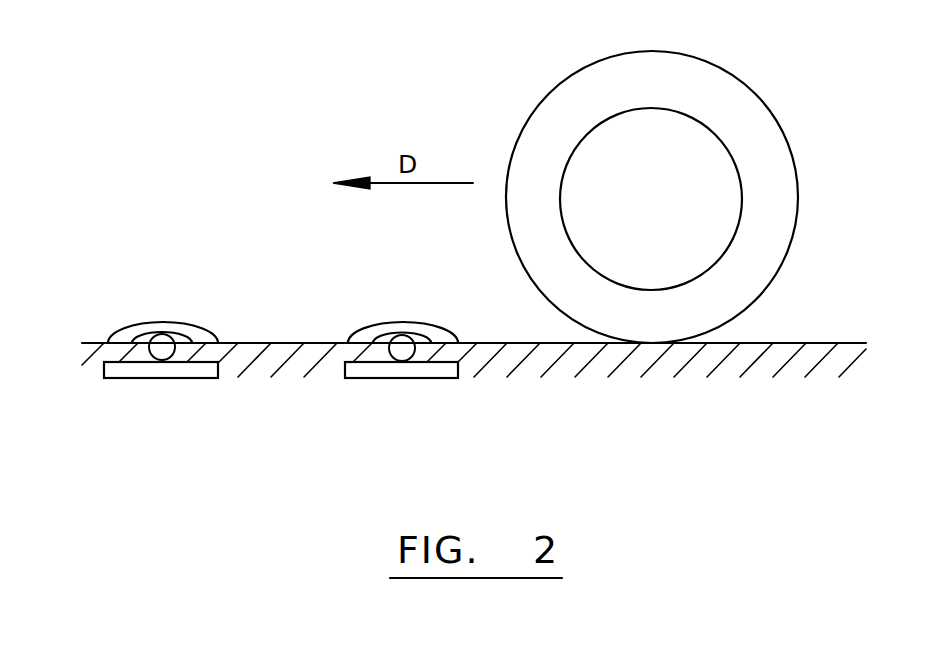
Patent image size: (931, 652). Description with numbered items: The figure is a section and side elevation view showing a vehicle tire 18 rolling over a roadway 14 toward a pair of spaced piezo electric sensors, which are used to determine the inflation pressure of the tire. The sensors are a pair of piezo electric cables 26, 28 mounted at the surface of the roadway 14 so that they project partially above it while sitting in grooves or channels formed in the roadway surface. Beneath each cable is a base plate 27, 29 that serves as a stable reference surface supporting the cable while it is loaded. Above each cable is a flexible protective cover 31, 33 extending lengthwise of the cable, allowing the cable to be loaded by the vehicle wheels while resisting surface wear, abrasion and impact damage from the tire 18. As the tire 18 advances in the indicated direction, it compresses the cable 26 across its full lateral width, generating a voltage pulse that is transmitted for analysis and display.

The roadway 14 is at (280, 343).
The tire 18 is at (747, 116).
The piezo electric cable 26 is at (404, 352).
The base plate 27 is at (380, 370).
The piezo electric cable 28 is at (163, 350).
The base plate 29 is at (139, 370).
The flexible protective cover 31 is at (390, 323).
The flexible protective cover 33 is at (145, 325).